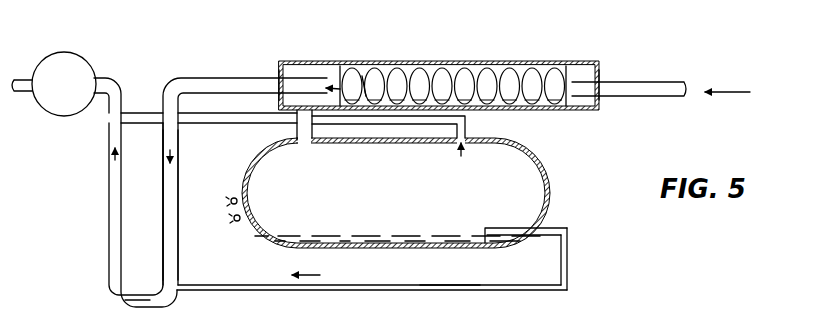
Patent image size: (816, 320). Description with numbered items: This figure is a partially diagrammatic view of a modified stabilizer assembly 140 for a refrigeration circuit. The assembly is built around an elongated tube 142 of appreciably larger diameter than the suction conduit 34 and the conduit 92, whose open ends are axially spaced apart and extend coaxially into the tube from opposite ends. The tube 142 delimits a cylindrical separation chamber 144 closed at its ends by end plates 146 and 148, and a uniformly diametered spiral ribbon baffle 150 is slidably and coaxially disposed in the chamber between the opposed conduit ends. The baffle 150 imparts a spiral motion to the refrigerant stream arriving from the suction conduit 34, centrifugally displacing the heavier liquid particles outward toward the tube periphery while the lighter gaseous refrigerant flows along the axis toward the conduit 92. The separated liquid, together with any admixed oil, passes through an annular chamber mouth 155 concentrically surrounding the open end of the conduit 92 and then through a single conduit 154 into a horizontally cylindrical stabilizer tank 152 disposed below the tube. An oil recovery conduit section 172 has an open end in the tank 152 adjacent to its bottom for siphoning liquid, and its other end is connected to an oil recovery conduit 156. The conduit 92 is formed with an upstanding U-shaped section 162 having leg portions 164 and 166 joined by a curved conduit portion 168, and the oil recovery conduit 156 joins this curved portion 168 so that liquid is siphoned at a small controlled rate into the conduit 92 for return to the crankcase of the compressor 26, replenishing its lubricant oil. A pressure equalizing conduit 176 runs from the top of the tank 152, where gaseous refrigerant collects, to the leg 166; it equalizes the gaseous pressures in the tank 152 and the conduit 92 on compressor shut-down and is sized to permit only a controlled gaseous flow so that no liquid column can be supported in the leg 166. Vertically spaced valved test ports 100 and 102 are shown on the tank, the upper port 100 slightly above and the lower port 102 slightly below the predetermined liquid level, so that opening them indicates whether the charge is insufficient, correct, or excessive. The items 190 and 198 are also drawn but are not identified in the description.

The compressor 26 is at (93, 59).
The suction conduit 34 is at (665, 97).
The conduit 92 is at (241, 42).
The upper valved test port 100 is at (232, 197).
The lower valved test port 102 is at (234, 221).
The stabilizer assembly 140 is at (369, 57).
The elongated tube 142 is at (408, 64).
The cylindrical separation chamber 144 is at (440, 66).
The end plate 146 is at (280, 66).
The end plate 148 is at (600, 108).
The spiral ribbon baffle 150 is at (567, 64).
The stabilizer tank 152 is at (549, 161).
The conduit 154 is at (280, 130).
The annular chamber mouth 155 is at (334, 80).
The oil recovery conduit 156 is at (480, 288).
The upstanding U-shaped section 162 is at (182, 251).
The leg portion 164 is at (172, 200).
The leg portion 166 is at (109, 221).
The curved conduit portion 168 is at (146, 305).
The oil recovery conduit section 172 is at (508, 225).
The pressure equalizing conduit 176 is at (402, 110).
The conduit 190 is at (448, 302).
The return line 198 is at (400, 319).